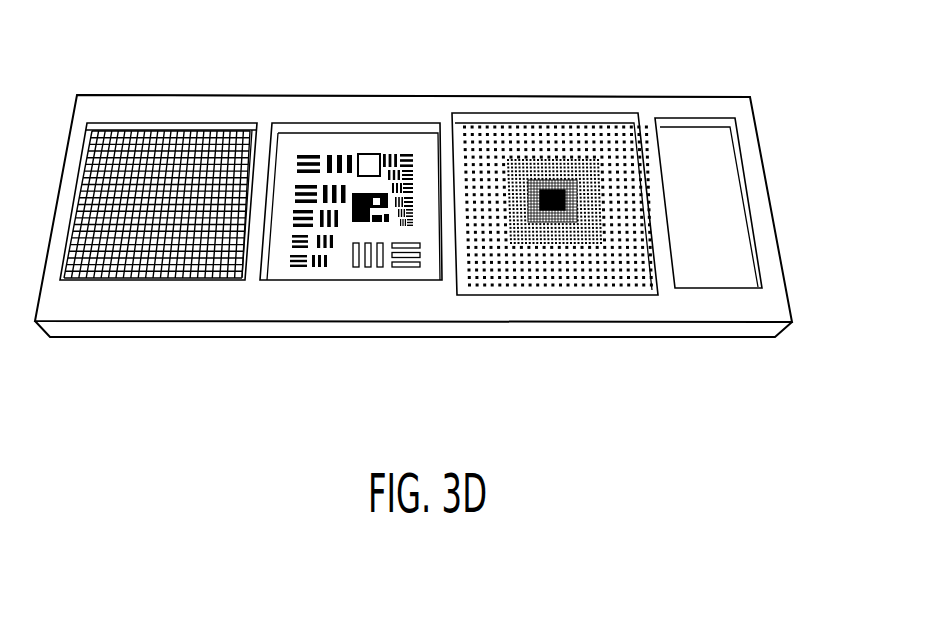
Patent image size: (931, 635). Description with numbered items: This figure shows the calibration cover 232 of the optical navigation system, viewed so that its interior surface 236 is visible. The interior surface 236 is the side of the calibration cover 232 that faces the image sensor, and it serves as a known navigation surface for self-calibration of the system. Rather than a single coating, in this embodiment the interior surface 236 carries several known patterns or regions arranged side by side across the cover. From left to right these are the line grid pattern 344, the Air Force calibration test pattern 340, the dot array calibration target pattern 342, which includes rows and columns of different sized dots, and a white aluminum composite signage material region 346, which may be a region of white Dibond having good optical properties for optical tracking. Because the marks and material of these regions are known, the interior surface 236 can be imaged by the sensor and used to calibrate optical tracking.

The calibration cover 232 is at (771, 338).
The interior surface 236 is at (732, 103).
The Air Force 1951 calibration test pattern 340 is at (347, 296).
The dot array calibration target pattern 342 is at (513, 308).
The line grid pattern 344 is at (143, 297).
The white aluminum composite signage material region 346 is at (704, 306).